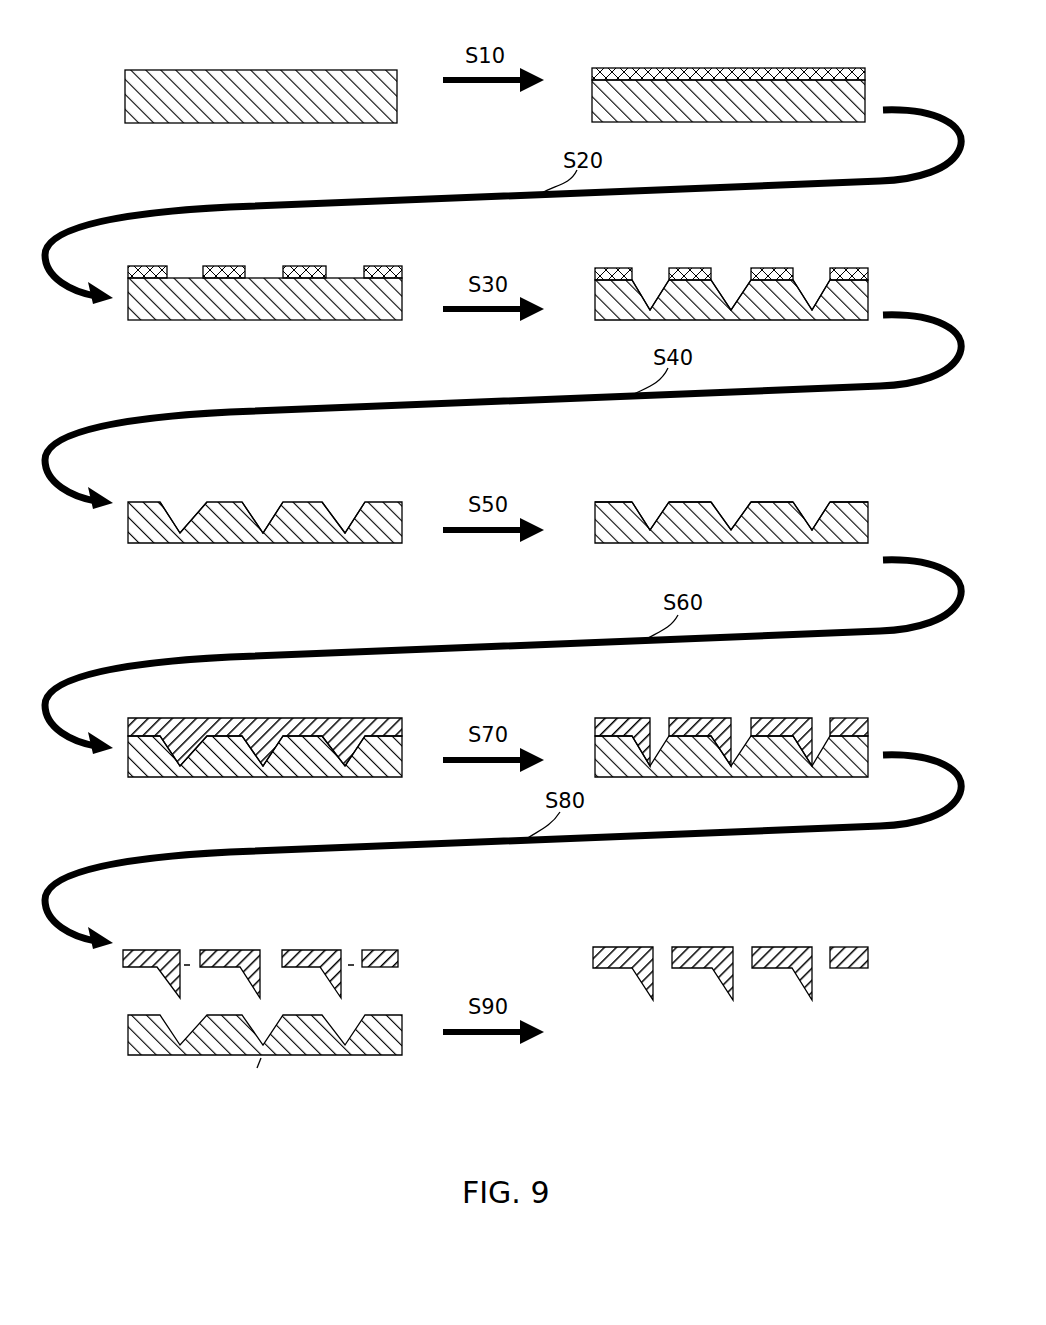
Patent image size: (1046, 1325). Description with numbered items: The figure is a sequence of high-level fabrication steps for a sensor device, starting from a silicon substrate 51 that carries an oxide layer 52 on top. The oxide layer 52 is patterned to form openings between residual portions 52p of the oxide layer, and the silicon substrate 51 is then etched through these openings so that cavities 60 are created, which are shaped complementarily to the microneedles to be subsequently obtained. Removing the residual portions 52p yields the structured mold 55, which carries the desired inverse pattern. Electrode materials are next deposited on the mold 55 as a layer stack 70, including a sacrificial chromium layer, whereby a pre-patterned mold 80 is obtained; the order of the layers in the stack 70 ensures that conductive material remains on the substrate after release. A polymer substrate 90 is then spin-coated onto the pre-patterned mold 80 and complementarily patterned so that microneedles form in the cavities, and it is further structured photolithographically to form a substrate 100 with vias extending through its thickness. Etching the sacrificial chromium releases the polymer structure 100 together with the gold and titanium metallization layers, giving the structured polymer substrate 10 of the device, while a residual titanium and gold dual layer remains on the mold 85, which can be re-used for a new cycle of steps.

The polymer substrate 10 is at (410, 946).
The silicon substrate 51 is at (125, 122).
The oxide layer 52 is at (635, 68).
The residual portions of the oxide layer 52p is at (300, 266).
The mold 55 is at (150, 545).
The cavities 60 is at (650, 278).
The layer stack 70 is at (635, 507).
The pre-patterned mold 80 is at (620, 552).
The re-used mold 85 is at (148, 1057).
The polymer substrate 90 is at (275, 720).
The polymer structure 100 is at (645, 716).